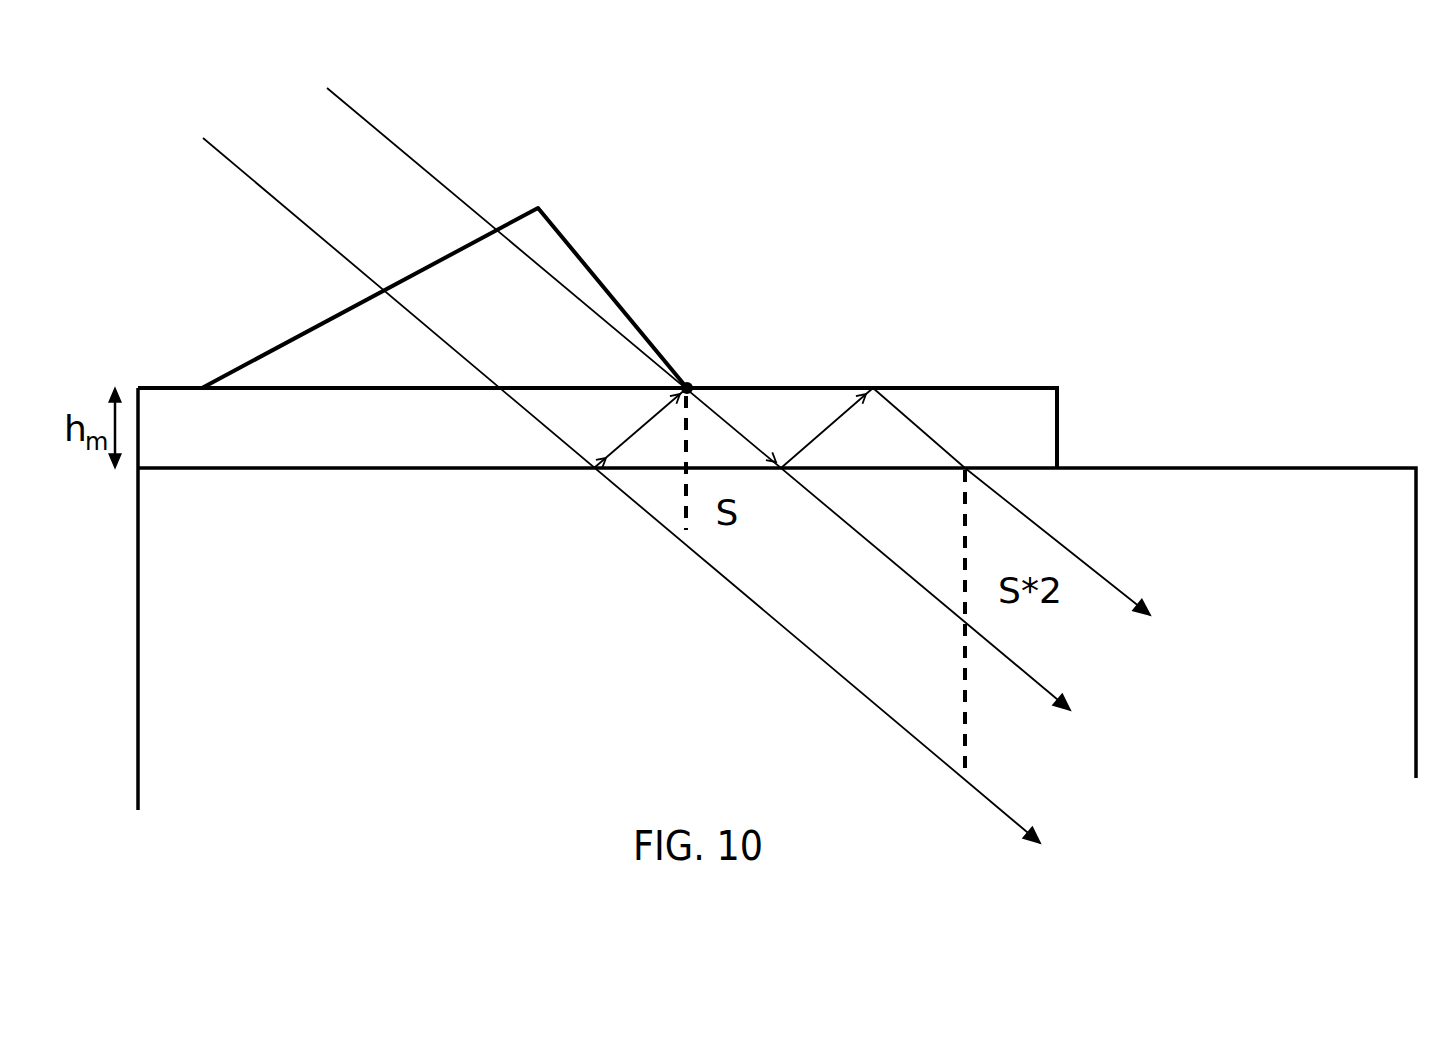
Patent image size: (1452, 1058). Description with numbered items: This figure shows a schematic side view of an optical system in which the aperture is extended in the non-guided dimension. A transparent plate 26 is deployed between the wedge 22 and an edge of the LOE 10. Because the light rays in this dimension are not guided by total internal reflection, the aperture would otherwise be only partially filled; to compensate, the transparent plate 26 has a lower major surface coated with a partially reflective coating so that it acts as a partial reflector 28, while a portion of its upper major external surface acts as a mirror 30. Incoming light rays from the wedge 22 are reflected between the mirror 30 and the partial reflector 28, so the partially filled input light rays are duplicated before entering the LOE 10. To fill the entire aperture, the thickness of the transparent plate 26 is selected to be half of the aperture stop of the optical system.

The LOE 10 is at (1225, 488).
The wedge 22 is at (547, 258).
The transparent plate 26 is at (1025, 427).
The partial reflector 28 is at (895, 465).
The mirror 30 is at (817, 387).